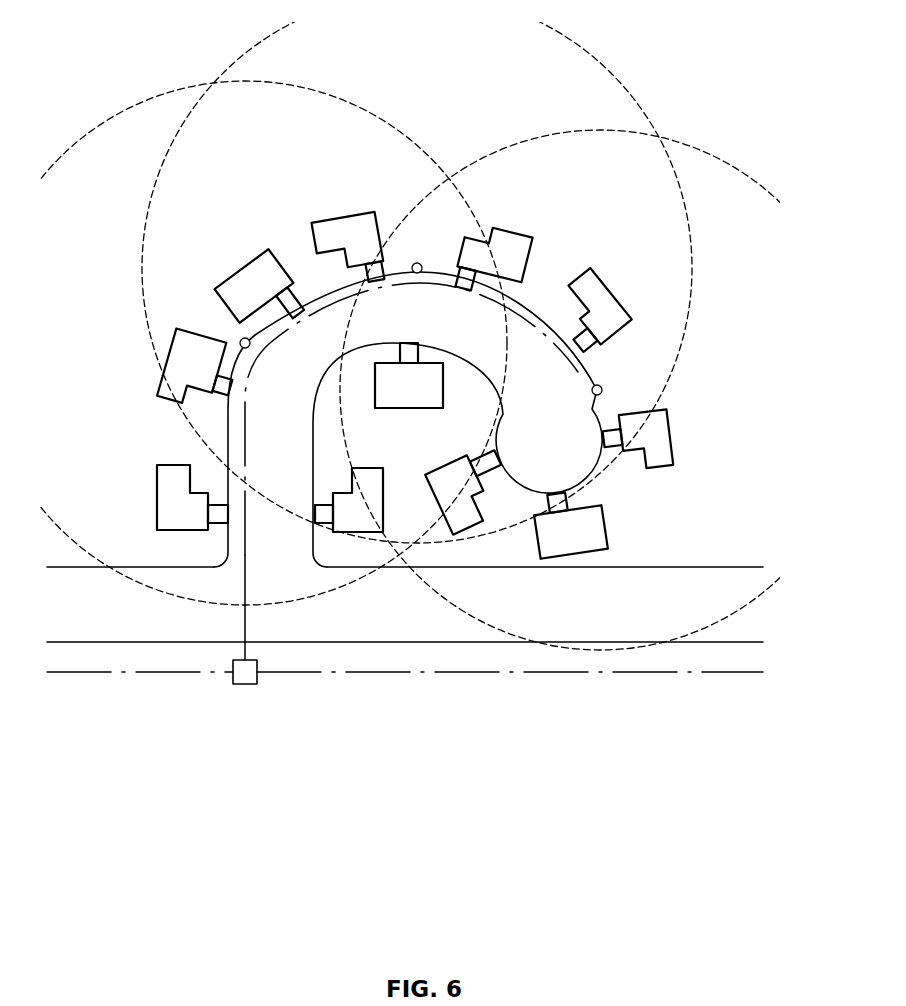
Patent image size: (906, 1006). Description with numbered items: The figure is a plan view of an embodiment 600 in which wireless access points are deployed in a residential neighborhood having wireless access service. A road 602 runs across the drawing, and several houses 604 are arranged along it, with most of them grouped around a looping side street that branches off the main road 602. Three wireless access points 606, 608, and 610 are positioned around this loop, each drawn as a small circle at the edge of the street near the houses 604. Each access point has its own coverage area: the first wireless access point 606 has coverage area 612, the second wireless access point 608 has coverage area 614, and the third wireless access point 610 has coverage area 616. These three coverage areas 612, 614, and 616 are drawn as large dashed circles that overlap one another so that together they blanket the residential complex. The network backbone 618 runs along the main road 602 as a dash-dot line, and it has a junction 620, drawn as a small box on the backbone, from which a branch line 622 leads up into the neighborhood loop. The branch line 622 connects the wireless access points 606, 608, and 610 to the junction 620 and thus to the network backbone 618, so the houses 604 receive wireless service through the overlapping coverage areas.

The embodiment 600 is at (553, 745).
The road 602 is at (650, 625).
The houses 604 is at (690, 477).
The wireless access point 606 is at (240, 341).
The wireless access point 608 is at (417, 263).
The wireless access point 610 is at (603, 389).
The coverage area 612 is at (117, 115).
The coverage area 614 is at (645, 112).
The coverage area 616 is at (674, 644).
The network backbone 618 is at (137, 673).
The junction 620 is at (258, 677).
The branch line 622 is at (248, 555).